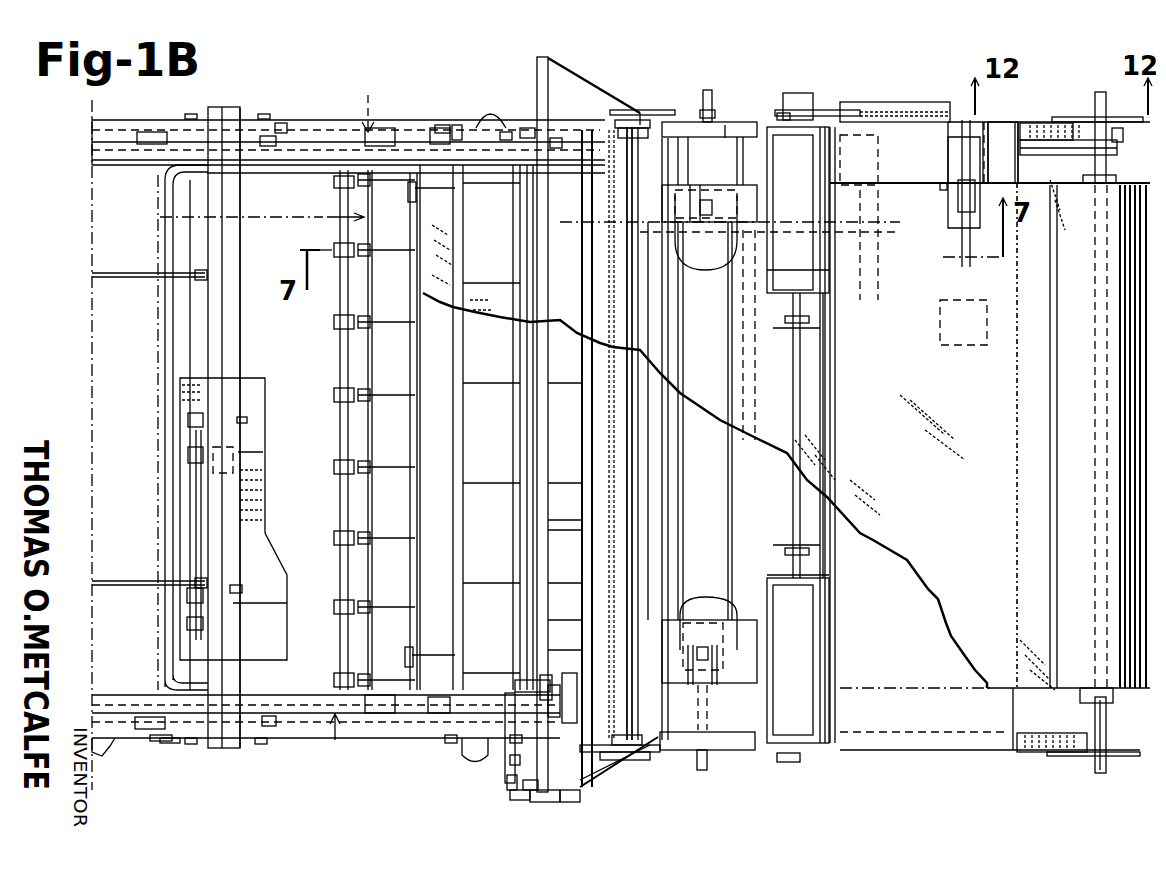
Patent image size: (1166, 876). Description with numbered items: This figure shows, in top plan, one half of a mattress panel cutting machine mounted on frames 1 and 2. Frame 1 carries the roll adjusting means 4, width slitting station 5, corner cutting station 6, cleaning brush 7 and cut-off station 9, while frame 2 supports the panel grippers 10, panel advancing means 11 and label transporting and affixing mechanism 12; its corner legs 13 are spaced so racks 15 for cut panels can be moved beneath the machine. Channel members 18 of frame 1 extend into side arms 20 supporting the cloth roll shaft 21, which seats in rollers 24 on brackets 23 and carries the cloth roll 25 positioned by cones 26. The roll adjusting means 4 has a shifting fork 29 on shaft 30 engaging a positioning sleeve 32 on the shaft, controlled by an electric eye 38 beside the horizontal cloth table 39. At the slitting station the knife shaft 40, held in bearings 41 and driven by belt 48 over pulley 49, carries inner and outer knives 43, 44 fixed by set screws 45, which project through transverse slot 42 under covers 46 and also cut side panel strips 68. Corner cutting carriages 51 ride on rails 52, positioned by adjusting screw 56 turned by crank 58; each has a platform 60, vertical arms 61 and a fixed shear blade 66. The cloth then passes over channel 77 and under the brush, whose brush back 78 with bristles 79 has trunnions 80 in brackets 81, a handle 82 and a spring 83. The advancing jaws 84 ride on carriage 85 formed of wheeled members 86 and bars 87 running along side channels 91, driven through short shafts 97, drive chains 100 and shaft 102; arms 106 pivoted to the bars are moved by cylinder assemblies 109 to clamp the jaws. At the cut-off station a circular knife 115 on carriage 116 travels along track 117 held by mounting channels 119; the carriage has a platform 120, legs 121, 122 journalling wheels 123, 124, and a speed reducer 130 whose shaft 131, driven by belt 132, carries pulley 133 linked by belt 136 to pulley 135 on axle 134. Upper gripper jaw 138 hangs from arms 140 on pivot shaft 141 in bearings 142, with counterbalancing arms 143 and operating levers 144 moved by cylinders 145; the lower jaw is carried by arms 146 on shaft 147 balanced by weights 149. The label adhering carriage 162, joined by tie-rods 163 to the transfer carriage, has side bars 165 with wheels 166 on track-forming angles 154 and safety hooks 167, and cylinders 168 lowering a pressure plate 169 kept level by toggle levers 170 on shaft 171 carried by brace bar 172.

The frame 1 is at (1038, 762).
The frame 2 is at (407, 750).
The roll adjusting means 4 is at (948, 194).
The width slitting station 5 is at (815, 110).
The corner cutting station 6 is at (726, 122).
The cleaning brush 7 is at (645, 104).
The cut-off station 9 is at (599, 785).
The panel grippers 10 is at (578, 452).
The panel advancing means 11 is at (345, 498).
The label transporting and affixing mechanism 12 is at (245, 108).
The corner legs 13 is at (478, 128).
The racks 15 is at (155, 307).
The channel members 18 is at (678, 122).
The side arms 20 is at (1045, 123).
The cloth roll shaft 21 is at (1095, 720).
The brackets 23 is at (1120, 117).
The rollers 24 is at (1100, 92).
The cloth roll 25 is at (1048, 355).
The cones 26 is at (1090, 185).
The shifting fork 29 is at (1124, 136).
The shaft 30 is at (1030, 130).
The positioning sleeve 32 is at (1080, 155).
The electric eye 38 is at (958, 203).
The horizontal cloth table 39 is at (943, 588).
The knife shaft 40 is at (800, 332).
The bearings 41 is at (780, 114).
The transverse slot 42 is at (835, 366).
The inner knife 43 is at (822, 212).
The outer knife 44 is at (823, 175).
The set screws 45 is at (815, 158).
The covers 46 is at (822, 270).
The belt 48 is at (850, 102).
The pulley 49 is at (792, 93).
The carriages 51 is at (705, 258).
The rails 52 is at (728, 473).
The adjusting screw 56 is at (703, 185).
The crank 58 is at (710, 90).
The horizontal platform 60 is at (725, 262).
The vertical arms 61 is at (703, 200).
The fixed shear blade 66 is at (672, 238).
The side panel strips 68 is at (770, 165).
The channel 77 is at (652, 160).
The brush back 78 is at (607, 248).
The bristles 79 is at (607, 268).
The trunnions 80 is at (615, 122).
The brackets 81 is at (618, 133).
The handle 82 is at (652, 110).
The spring 83 is at (650, 752).
The jaws 84 is at (422, 350).
The carriage 85 is at (262, 209).
The wheeled members 86 is at (350, 418).
The bars 87 is at (380, 226).
The side channels 91 is at (440, 125).
The short shafts 97 is at (557, 138).
The drive chains 100 is at (525, 128).
The shaft 102 is at (506, 132).
The arms 106 is at (398, 128).
The cylinder assembly 109 is at (334, 181).
The knife 115 is at (600, 768).
The carriage 116 is at (546, 802).
The track 117 is at (530, 533).
The mounting channels 119 is at (570, 72).
The platform 120 is at (580, 807).
The upstanding legs 121 is at (510, 760).
The upstanding legs 122 is at (546, 676).
The wheel 123 is at (520, 800).
The wheel 124 is at (568, 723).
The speed reducer 130 is at (578, 650).
The shaft 131 is at (505, 700).
The belt 132 is at (554, 718).
The pulley 133 is at (518, 681).
The axle 134 is at (523, 788).
The pulley 135 is at (507, 785).
The belt 136 is at (510, 741).
The jaw 138 is at (513, 445).
The arms 140 is at (490, 382).
The pivot shaft 141 is at (455, 443).
The bearings 142 is at (458, 125).
The counterbalancing arms 143 is at (436, 188).
The operating levers 144 is at (440, 128).
The operating cylinders 145 is at (378, 118).
The arms 146 is at (565, 382).
The shaft 147 is at (575, 520).
The weights 149 is at (578, 620).
The track-forming angles 154 is at (121, 118).
The label adhering carriage 162 is at (251, 336).
The tie-rods 163 is at (115, 273).
The side bars 165 is at (281, 123).
The wheels 166 is at (137, 138).
The safety hooks 167 is at (190, 114).
The cylinders 168 is at (247, 470).
The pressure plate 169 is at (268, 380).
The toggle levers 170 is at (187, 420).
The shaft 171 is at (196, 487).
The brace bar 172 is at (188, 435).